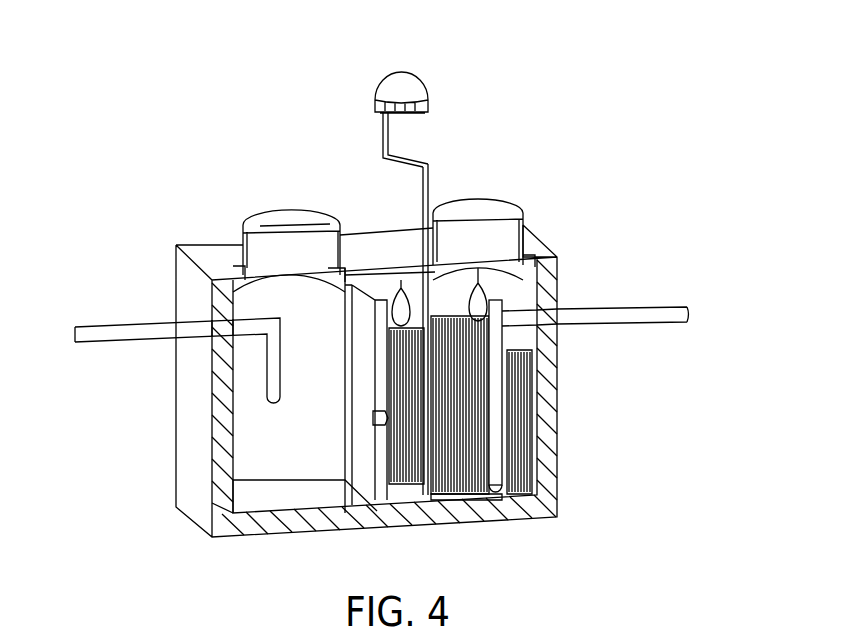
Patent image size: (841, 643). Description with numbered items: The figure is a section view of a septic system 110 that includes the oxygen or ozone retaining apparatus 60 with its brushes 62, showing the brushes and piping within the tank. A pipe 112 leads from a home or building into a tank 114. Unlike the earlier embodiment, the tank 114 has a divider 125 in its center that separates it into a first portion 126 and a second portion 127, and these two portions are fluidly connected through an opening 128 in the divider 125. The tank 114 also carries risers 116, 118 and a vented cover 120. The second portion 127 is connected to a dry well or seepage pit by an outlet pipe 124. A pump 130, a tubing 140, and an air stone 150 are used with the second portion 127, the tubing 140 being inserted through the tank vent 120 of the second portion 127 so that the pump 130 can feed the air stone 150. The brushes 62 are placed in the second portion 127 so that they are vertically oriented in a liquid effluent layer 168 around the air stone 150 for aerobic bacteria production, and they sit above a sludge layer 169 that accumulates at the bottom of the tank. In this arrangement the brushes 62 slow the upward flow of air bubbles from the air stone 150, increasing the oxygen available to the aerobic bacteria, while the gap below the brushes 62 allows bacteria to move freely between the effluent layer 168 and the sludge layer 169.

The septic system 110 is at (622, 168).
The pipe 112 is at (103, 330).
The tank 114 is at (190, 413).
The riser 116 is at (280, 215).
The riser 118 is at (503, 207).
The vented cover 120 is at (430, 192).
The outlet pipe 124 is at (660, 310).
The divider 125 is at (372, 505).
The first portion 126 is at (277, 497).
The second portion 127 is at (516, 505).
The opening 128 is at (373, 417).
The pump 130 is at (405, 83).
The tubing 140 is at (408, 158).
The air stone 150 is at (420, 507).
The liquid effluent layer 168 is at (527, 332).
The sludge layer 169 is at (452, 515).
The oxygen or ozone retaining apparatus 60 is at (493, 318).
The brush 62 is at (512, 470).